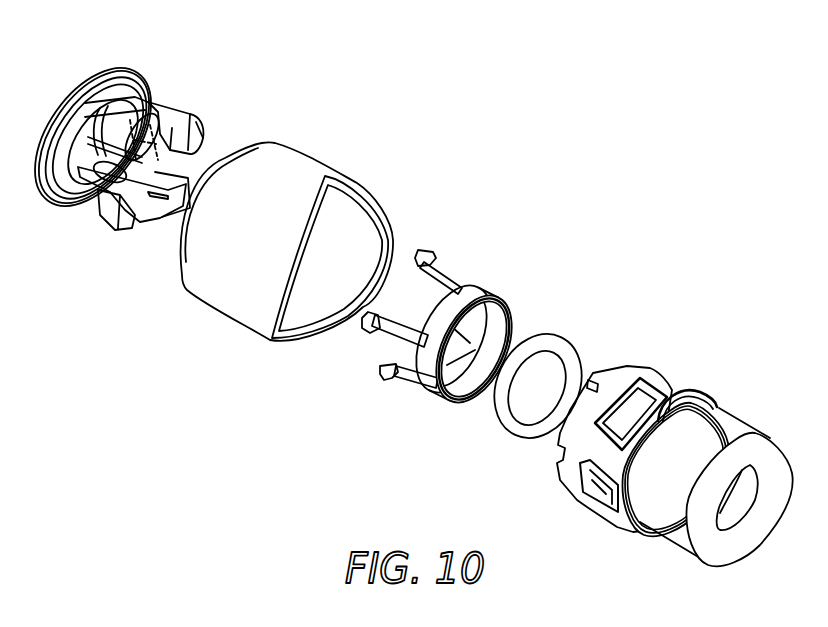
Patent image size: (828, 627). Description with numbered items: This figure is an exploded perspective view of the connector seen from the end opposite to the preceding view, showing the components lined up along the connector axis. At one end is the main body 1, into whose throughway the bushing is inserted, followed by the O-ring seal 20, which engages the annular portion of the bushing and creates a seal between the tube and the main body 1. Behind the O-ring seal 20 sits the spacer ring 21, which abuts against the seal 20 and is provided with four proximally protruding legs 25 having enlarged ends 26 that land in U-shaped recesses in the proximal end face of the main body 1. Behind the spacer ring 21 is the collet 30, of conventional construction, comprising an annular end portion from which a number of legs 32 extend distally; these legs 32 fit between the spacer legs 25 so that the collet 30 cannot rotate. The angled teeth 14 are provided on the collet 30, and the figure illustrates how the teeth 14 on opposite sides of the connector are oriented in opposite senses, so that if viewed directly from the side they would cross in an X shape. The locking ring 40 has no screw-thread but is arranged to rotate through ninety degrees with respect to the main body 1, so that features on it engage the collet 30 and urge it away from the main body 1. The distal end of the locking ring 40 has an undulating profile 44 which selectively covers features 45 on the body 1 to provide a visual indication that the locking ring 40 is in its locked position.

The main body 1 is at (675, 460).
The angled teeth 14 is at (201, 124).
The O-ring seal 20 is at (560, 337).
The spacer ring 21 is at (480, 293).
The legs 25 is at (418, 296).
The enlarged ends 26 is at (424, 250).
The collet 30 is at (111, 68).
The legs 32 is at (163, 106).
The locking ring 40 is at (302, 227).
The undulating profile 44 is at (383, 200).
The features 45 is at (690, 398).